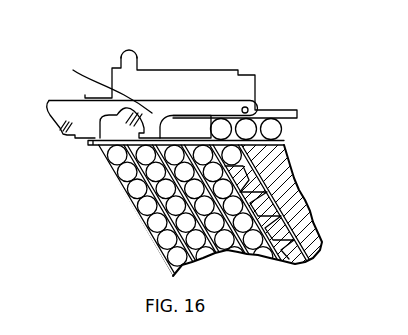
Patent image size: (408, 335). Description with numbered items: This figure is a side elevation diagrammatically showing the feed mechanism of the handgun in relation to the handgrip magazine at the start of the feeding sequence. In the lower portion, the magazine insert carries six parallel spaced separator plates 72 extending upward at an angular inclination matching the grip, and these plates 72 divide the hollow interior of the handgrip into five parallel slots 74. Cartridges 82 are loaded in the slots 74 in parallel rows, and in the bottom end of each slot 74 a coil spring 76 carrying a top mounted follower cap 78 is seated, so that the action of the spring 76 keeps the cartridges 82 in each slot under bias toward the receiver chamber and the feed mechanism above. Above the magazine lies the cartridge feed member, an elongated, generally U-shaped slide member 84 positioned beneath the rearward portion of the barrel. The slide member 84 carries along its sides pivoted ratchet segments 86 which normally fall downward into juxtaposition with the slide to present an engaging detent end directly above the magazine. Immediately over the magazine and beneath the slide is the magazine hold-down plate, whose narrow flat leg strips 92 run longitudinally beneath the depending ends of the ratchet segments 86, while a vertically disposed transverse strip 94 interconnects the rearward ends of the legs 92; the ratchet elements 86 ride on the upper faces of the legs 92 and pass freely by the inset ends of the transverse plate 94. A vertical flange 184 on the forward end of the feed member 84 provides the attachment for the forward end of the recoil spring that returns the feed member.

The vertical flange 184 is at (123, 56).
The slide member 84 is at (248, 88).
The ratchet segments 86 is at (84, 118).
The transverse strip 94 is at (203, 128).
The leg strips 92 is at (93, 146).
The separator plates 72 is at (124, 191).
The cartridges 82 is at (275, 132).
The follower cap 78 is at (247, 180).
The slots 74 is at (290, 221).
The coil spring 76 is at (317, 238).